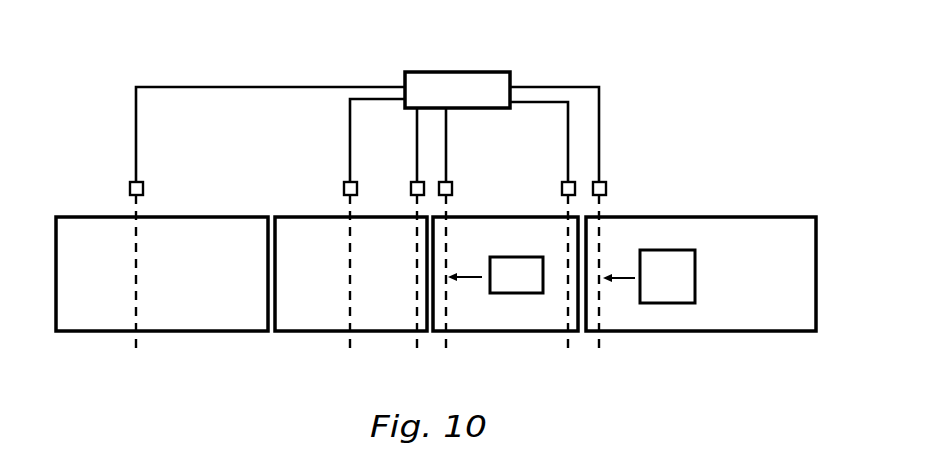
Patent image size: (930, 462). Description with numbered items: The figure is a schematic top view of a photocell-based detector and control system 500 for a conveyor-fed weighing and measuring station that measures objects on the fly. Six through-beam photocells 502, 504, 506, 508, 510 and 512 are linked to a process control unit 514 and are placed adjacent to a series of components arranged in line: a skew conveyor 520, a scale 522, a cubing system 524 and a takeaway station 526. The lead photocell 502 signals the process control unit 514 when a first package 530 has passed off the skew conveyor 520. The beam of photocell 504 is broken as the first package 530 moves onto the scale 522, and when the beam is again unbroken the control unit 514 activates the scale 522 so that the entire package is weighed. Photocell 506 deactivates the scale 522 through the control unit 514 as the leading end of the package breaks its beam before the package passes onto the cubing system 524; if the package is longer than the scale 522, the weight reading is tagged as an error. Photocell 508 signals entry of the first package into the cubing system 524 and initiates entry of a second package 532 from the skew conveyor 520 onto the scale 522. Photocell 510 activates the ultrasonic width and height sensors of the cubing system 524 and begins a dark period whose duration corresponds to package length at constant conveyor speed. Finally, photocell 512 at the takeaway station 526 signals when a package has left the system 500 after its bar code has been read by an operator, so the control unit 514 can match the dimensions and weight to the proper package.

The system 500 is at (688, 104).
The process control unit 514 is at (480, 86).
The photocell 512 is at (143, 186).
The photocell 510 is at (357, 184).
The photocell 508 is at (424, 186).
The photocell 506 is at (453, 188).
The photocell 504 is at (575, 186).
The lead photocell 502 is at (606, 188).
The takeaway station 526 is at (193, 317).
The cubing system 524 is at (367, 318).
The scale 522 is at (525, 323).
The skew conveyor 520 is at (718, 322).
The first package 530 is at (508, 278).
The second package 532 is at (668, 263).